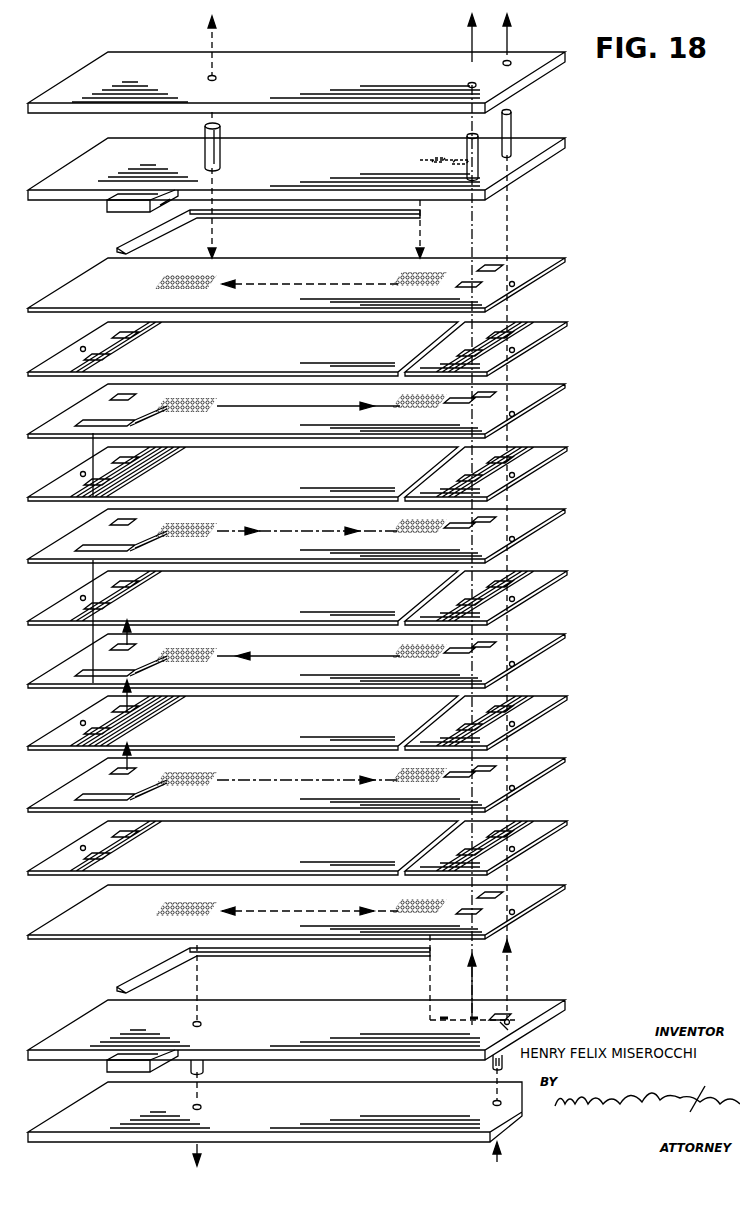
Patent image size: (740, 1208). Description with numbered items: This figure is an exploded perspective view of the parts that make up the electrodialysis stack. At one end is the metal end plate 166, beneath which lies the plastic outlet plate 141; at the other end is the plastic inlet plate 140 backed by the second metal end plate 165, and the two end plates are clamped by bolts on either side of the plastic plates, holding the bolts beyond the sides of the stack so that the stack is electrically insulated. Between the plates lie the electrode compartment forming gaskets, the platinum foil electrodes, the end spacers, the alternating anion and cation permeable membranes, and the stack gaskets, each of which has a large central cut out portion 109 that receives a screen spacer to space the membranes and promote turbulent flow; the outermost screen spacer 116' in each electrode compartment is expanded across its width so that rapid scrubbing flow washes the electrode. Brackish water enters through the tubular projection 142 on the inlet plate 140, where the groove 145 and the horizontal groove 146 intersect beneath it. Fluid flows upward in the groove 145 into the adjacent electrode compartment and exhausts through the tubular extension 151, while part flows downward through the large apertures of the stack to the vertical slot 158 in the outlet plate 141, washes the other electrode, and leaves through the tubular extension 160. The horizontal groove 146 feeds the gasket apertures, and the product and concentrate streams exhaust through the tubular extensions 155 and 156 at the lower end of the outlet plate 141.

The metal end plate 166 is at (314, 64).
The outlet plate 141 is at (100, 150).
The tubular extension 160 is at (221, 156).
The tubular extension 156 is at (466, 146).
The tubular extension 155 is at (512, 124).
The vertical slot 158 is at (418, 158).
The screen spacer 116' is at (311, 259).
The large central cut out portion 109 is at (388, 778).
The inlet plate 140 is at (92, 1020).
The tubular extension 151 is at (205, 1060).
The groove 145 is at (432, 1020).
The horizontal groove 146 is at (498, 1028).
The tubular projection 142 is at (492, 1064).
The metal end plate 165 is at (76, 1106).